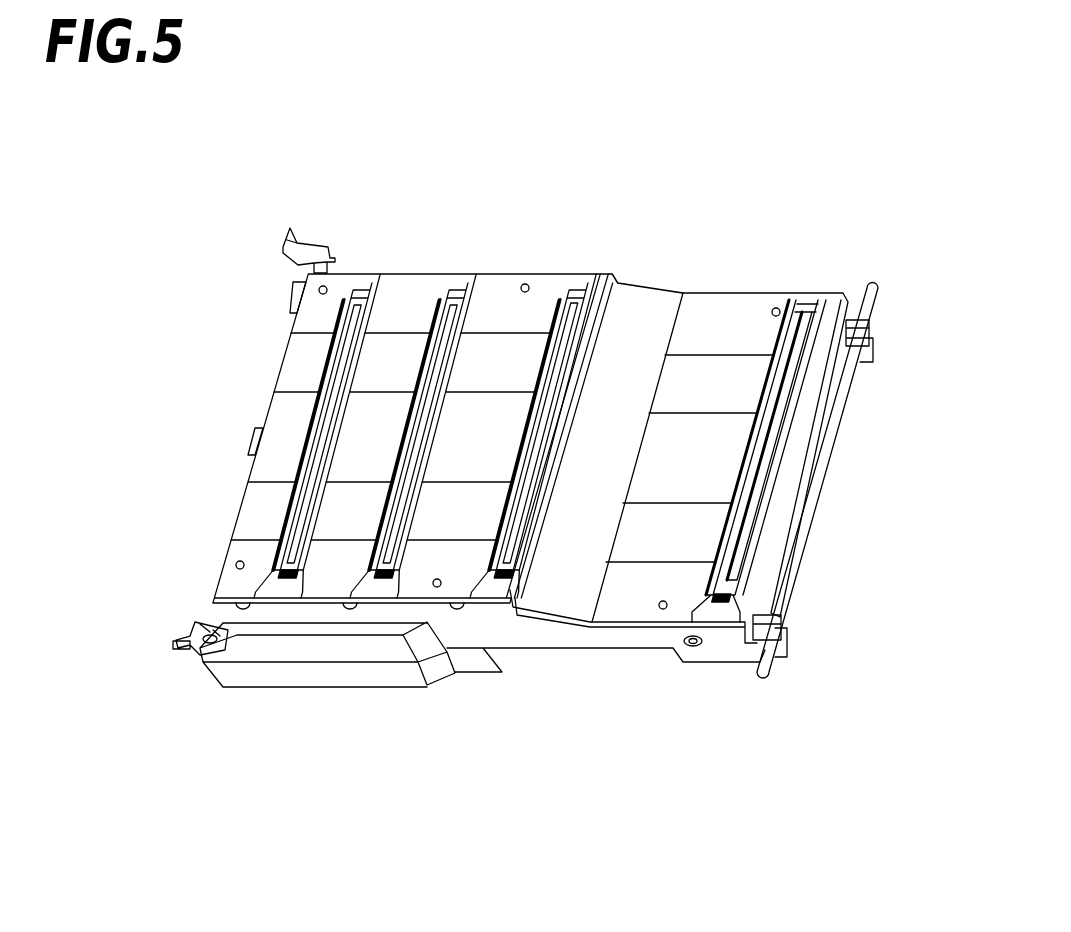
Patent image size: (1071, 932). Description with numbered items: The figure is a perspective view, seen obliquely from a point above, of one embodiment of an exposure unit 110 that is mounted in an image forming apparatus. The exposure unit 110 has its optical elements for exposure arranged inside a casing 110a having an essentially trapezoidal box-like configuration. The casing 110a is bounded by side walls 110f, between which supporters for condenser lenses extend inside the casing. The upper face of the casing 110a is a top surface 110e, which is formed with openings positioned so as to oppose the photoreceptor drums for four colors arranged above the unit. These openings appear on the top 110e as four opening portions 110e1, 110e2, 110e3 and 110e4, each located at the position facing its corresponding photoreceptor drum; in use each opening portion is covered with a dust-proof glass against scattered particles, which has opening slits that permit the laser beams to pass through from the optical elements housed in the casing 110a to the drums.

The exposure unit 110 is at (829, 240).
The top surface 110e is at (632, 315).
The opening portion 110e1 is at (340, 345).
The opening portion 110e2 is at (433, 277).
The opening portion 110e3 is at (553, 282).
The opening portion 110e4 is at (795, 326).
The side wall 110f is at (542, 630).
The casing 110a is at (597, 655).